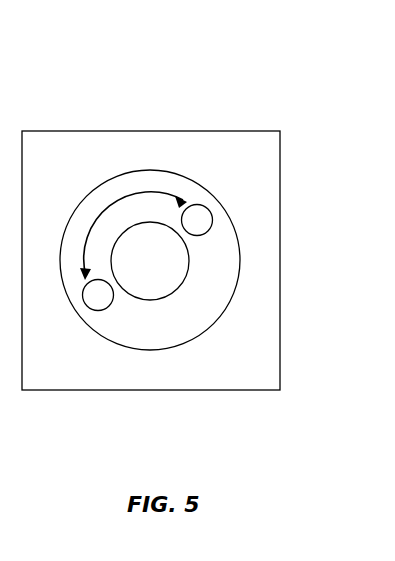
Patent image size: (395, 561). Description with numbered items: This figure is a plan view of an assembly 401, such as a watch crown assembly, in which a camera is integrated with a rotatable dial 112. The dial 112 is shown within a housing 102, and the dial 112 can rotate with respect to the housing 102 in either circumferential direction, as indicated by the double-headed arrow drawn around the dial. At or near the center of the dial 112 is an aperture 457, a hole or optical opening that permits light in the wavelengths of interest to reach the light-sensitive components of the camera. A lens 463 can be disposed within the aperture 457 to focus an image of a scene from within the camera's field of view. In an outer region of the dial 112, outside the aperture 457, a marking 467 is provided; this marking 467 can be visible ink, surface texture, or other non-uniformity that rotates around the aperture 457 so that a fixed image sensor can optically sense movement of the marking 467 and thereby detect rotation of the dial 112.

The assembly 401 is at (67, 103).
The housing 102 is at (227, 372).
The rotatable dial 112 is at (127, 180).
The aperture 457 is at (125, 290).
The lens 463 is at (157, 273).
The marking 467 is at (203, 205).